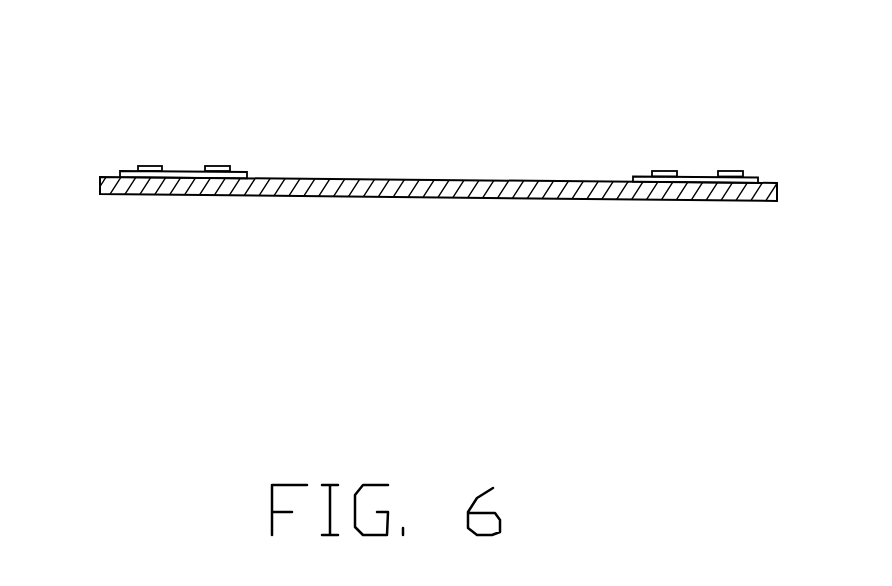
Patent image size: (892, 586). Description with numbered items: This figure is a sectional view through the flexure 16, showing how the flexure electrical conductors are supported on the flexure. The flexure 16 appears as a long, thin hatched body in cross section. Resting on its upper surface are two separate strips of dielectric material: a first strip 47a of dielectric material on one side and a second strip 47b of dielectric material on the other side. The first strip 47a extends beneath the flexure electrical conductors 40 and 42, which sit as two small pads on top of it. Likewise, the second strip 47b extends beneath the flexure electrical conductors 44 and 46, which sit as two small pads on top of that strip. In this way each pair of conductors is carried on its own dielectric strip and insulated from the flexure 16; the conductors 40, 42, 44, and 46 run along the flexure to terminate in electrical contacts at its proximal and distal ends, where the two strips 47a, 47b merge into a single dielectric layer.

The flexure 16 is at (763, 162).
The flexure electrical conductor 40 is at (152, 166).
The flexure electrical conductor 42 is at (227, 166).
The flexure electrical conductor 44 is at (663, 171).
The flexure electrical conductor 46 is at (723, 171).
The first strip of dielectric material 47a is at (120, 171).
The second strip of dielectric material 47b is at (633, 177).